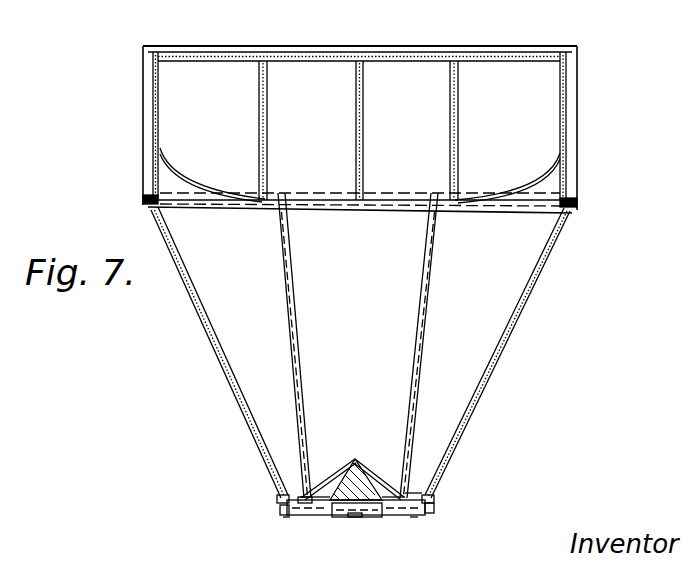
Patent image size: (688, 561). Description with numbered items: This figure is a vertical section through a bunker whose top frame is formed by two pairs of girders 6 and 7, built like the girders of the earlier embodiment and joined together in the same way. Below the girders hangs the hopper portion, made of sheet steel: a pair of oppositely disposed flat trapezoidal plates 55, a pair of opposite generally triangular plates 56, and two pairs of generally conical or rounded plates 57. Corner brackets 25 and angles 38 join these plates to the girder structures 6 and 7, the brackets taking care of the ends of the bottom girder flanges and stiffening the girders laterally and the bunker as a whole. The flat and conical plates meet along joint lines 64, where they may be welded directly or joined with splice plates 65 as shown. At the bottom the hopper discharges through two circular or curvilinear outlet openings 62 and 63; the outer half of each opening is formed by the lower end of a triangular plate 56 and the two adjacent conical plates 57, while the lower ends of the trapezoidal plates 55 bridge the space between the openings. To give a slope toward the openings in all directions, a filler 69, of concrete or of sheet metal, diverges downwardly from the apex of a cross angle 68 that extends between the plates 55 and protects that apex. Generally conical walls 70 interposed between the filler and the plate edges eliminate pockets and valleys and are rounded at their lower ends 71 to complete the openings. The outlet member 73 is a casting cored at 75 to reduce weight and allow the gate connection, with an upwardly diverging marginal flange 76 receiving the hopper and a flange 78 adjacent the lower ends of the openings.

The girder 7 is at (203, 70).
The girder 6 is at (143, 112).
The corner bracket 25 is at (178, 183).
The angle 38 is at (385, 200).
The flat trapezoidal plate 55 is at (355, 276).
The generally triangular plate 56 is at (220, 352).
The conical or rounded plate 57 is at (352, 263).
The outlet opening 62 is at (420, 492).
The outlet opening 63 is at (298, 516).
The joint line 64 is at (284, 318).
The splice plate 65 is at (303, 365).
The cross angle 68 is at (356, 458).
The filler 69 is at (330, 477).
The conical wall 70 is at (327, 497).
The rounded lower end 71 is at (300, 498).
The outlet member 73 is at (284, 508).
The cored portion 75 is at (340, 516).
The marginal flange 76 is at (432, 506).
The flange 78 is at (285, 517).